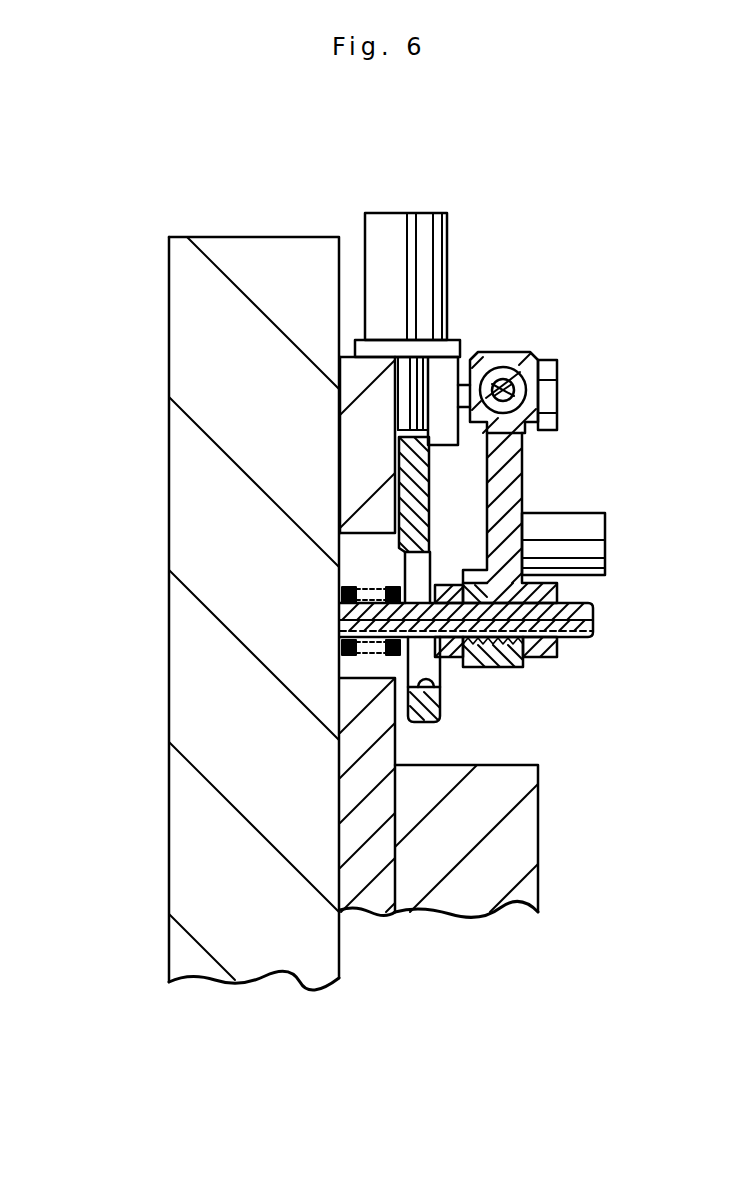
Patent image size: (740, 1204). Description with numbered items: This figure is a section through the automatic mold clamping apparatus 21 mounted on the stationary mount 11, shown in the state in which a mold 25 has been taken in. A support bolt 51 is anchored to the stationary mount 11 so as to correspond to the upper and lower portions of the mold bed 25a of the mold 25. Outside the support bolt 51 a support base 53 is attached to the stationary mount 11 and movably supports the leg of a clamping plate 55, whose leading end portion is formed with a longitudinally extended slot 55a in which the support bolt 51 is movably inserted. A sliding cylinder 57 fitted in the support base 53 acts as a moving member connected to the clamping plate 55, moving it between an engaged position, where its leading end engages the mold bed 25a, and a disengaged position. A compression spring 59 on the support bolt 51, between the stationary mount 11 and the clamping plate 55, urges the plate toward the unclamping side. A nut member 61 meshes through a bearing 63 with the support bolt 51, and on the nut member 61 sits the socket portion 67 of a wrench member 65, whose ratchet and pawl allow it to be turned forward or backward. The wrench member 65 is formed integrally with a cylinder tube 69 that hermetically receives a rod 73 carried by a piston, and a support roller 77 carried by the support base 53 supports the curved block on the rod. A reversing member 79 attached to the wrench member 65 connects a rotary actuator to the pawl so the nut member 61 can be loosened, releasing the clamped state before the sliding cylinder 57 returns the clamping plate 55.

The stationary mount 11 is at (188, 321).
The automatic mold clamping apparatus 21 is at (340, 494).
The mold 25 is at (487, 915).
The mold bed 25a is at (367, 870).
The support bolt 51 is at (570, 612).
The support base 53 is at (357, 433).
The clamping plate 55 is at (417, 730).
The slot 55a is at (445, 665).
The sliding cylinder 57 is at (427, 250).
The compression spring 59 is at (352, 580).
The nut member 61 is at (518, 668).
The bearing 63 is at (450, 658).
The wrench member 65 is at (522, 478).
The socket portion 67 is at (557, 653).
The cylinder tube 69 is at (520, 415).
The rod 73 is at (507, 383).
The support roller 77 is at (540, 380).
The reversing member 79 is at (582, 530).